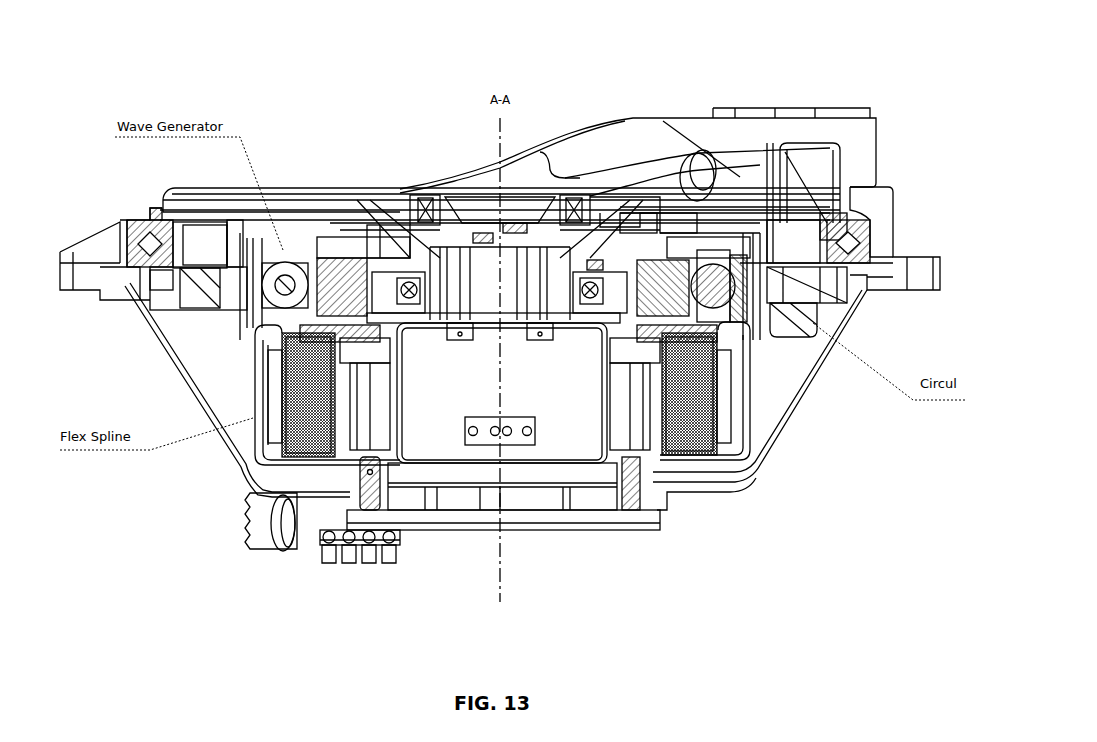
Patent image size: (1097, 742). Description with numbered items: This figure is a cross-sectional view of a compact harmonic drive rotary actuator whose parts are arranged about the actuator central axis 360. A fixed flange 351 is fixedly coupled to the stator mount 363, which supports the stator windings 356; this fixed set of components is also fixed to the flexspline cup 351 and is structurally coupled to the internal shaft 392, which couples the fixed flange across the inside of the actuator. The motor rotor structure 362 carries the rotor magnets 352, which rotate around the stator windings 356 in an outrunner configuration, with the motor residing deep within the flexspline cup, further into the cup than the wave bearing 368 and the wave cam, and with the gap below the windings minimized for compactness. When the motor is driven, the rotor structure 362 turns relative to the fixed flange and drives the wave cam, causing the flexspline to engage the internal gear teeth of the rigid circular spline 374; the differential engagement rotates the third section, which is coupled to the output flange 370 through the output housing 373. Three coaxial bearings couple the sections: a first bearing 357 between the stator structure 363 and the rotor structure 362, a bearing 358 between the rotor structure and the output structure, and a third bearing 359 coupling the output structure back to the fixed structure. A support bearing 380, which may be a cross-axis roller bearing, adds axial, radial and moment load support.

The fixed flange / flexspline cup 351 is at (112, 290).
The rotor magnets 352 is at (268, 378).
The stator windings 356 is at (300, 428).
The first bearing 357 is at (387, 331).
The bearing 358 is at (400, 285).
The third bearing 359 is at (413, 210).
The actuator central axis 360 is at (497, 543).
The motor rotor structure 362 is at (258, 346).
The stator mount 363 is at (350, 463).
The wave bearing 368 is at (262, 248).
The output flange 370 is at (683, 117).
The output housing 373 is at (178, 292).
The rigid circular spline 374 is at (168, 189).
The support bearing 380 is at (120, 228).
The internal shaft 392 is at (397, 365).